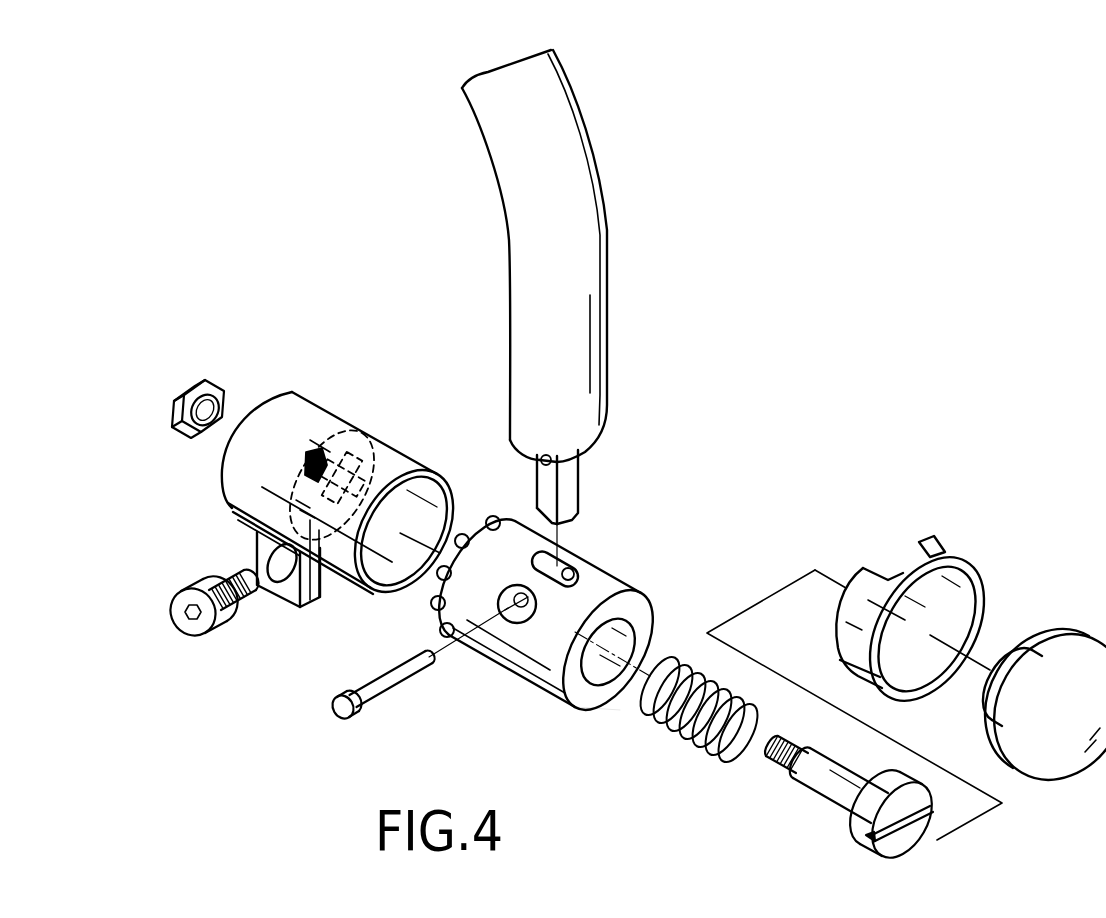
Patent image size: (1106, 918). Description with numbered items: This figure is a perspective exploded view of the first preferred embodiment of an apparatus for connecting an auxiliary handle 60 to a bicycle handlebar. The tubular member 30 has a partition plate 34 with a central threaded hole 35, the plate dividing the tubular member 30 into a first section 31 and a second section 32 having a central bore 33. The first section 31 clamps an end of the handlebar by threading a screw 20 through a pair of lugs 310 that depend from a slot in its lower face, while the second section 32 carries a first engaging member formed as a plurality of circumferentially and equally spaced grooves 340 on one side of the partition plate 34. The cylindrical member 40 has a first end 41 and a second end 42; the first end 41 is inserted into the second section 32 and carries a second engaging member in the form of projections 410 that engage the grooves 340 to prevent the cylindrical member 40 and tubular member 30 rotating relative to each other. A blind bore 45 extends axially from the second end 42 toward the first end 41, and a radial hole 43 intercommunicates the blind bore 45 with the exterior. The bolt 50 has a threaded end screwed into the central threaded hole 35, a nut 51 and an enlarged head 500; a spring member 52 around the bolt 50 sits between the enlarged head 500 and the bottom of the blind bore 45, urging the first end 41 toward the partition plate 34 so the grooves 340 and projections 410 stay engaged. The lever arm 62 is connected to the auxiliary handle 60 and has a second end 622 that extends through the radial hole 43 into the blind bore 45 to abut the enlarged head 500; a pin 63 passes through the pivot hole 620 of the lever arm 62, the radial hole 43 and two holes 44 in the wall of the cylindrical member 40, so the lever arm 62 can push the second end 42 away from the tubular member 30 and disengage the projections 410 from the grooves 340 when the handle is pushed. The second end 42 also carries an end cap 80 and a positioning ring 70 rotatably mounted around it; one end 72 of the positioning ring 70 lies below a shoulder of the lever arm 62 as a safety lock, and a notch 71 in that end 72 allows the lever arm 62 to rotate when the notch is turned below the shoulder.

The screw 20 is at (198, 634).
The tubular member 30 is at (325, 488).
The first section 31 is at (236, 515).
The second section 32 is at (351, 578).
The central bore 33 is at (421, 505).
The partition plate 34 is at (400, 440).
The grooves 340 is at (352, 455).
The central threaded hole 35 is at (328, 432).
The lugs 310 is at (319, 598).
The cylindrical member 40 is at (551, 610).
The first end 41 is at (515, 522).
The projections 410 is at (466, 542).
The second end 42 is at (582, 698).
The radial hole 43 is at (562, 551).
The holes 44 is at (520, 615).
The blind bore 45 is at (604, 680).
The bolt 50 is at (884, 802).
The enlarged head 500 is at (893, 853).
The nut 51 is at (198, 378).
The spring member 52 is at (746, 727).
The auxiliary handle 60 is at (563, 308).
The lever arm 62 is at (572, 465).
The pivot hole 620 is at (540, 455).
The second end 622 is at (575, 517).
The pin 63 is at (386, 686).
The positioning ring 70 is at (895, 599).
The notch 71 is at (905, 558).
The end 72 is at (842, 612).
The end cap 80 is at (1067, 648).